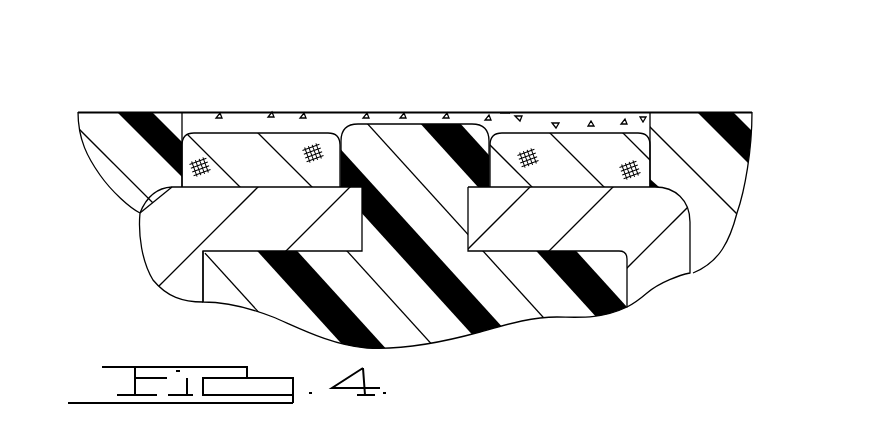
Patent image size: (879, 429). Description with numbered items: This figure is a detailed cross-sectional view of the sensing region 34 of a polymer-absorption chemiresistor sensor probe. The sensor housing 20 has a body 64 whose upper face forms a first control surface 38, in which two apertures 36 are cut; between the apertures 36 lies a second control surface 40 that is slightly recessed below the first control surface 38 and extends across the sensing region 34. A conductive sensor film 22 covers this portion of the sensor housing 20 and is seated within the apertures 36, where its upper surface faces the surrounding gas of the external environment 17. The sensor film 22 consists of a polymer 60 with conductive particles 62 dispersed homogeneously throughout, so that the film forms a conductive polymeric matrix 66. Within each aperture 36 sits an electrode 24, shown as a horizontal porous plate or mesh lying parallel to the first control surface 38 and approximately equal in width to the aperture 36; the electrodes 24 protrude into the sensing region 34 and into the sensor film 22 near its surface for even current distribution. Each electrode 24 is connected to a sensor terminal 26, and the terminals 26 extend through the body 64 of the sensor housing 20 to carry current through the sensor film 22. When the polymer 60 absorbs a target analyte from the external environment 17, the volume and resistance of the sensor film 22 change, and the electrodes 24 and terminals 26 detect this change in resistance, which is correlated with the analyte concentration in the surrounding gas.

The external environment 17 is at (515, 97).
The sensor housing 20 is at (113, 178).
The conductive sensor film 22 is at (640, 120).
The electrodes 24 is at (218, 150).
The sensor terminals 26 is at (168, 247).
The sensing region 34 is at (190, 54).
The apertures 36 is at (540, 127).
The first control surface 38 is at (93, 110).
The second control surface 40 is at (428, 122).
The polymer 60 is at (335, 118).
The conductive particles 62 is at (263, 113).
The body 64 is at (573, 302).
The conductive polymeric matrix 66 is at (581, 118).